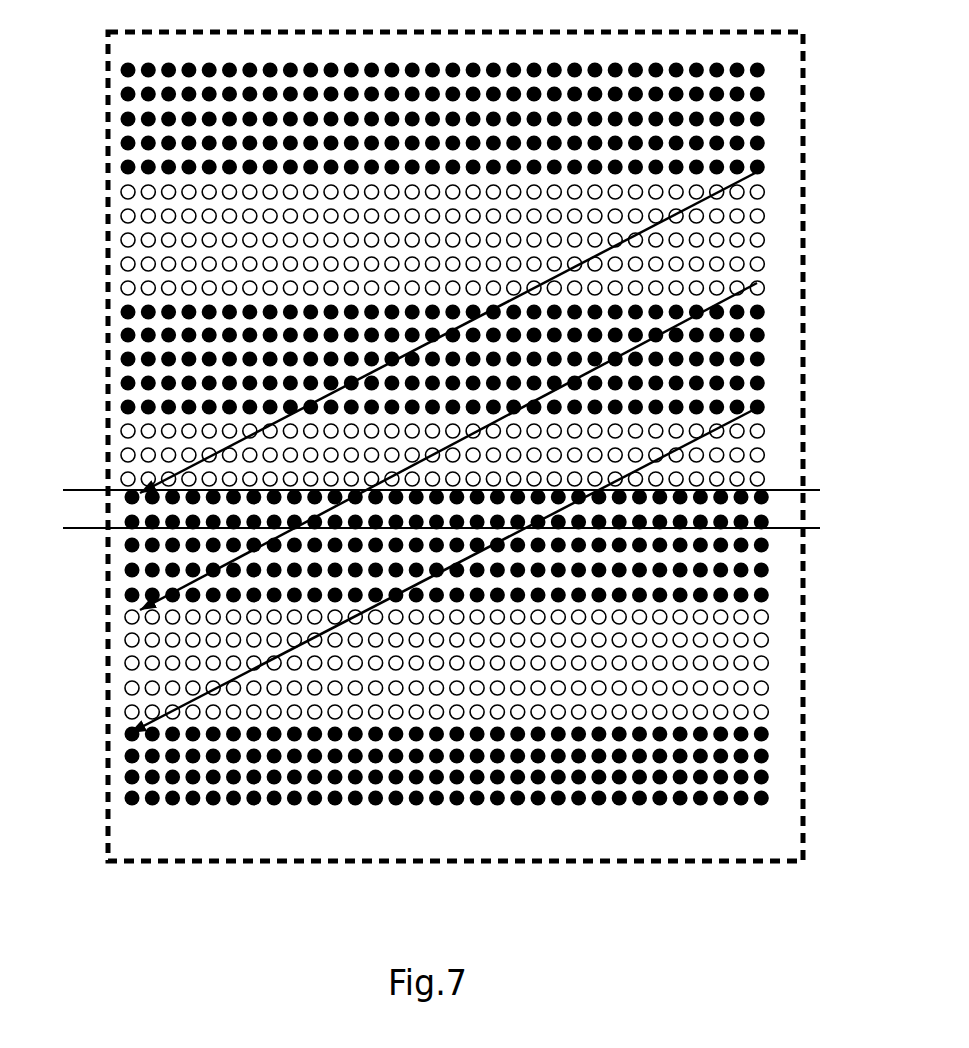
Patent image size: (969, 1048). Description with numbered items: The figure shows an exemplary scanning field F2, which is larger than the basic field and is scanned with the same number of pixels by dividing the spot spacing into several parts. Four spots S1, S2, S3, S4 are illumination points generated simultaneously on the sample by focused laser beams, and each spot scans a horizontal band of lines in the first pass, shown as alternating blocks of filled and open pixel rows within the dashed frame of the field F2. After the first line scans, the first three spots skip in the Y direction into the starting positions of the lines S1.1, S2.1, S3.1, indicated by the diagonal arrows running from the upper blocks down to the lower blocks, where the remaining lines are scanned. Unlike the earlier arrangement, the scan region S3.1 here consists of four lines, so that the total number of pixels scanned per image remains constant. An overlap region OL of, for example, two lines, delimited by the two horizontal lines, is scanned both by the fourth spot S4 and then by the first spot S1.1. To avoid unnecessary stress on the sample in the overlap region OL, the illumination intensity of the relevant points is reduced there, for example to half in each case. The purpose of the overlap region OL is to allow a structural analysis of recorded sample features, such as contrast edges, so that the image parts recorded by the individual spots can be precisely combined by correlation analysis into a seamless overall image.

The first spot S1 is at (410, 107).
The second spot S2 is at (403, 231).
The third spot S3 is at (406, 346).
The fourth spot S4 is at (408, 435).
The starting position of first spot after skip S1.1 is at (398, 387).
The starting position of second spot after skip S2.1 is at (397, 501).
The scan region of third spot after skip S3.1 is at (398, 607).
The overlap region OL is at (466, 510).
The scanned field F2 is at (680, 863).